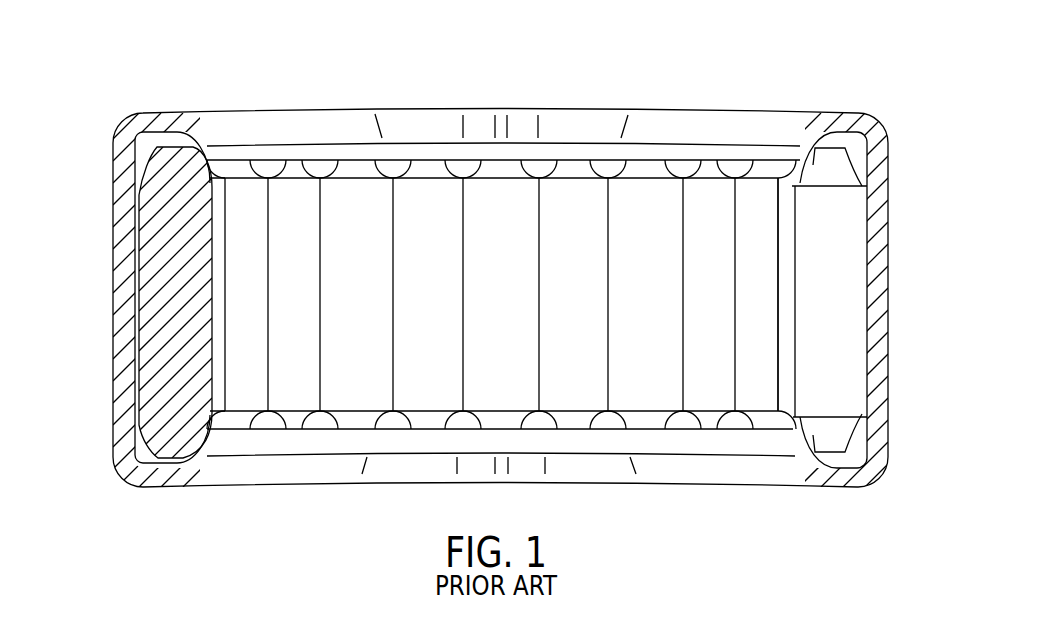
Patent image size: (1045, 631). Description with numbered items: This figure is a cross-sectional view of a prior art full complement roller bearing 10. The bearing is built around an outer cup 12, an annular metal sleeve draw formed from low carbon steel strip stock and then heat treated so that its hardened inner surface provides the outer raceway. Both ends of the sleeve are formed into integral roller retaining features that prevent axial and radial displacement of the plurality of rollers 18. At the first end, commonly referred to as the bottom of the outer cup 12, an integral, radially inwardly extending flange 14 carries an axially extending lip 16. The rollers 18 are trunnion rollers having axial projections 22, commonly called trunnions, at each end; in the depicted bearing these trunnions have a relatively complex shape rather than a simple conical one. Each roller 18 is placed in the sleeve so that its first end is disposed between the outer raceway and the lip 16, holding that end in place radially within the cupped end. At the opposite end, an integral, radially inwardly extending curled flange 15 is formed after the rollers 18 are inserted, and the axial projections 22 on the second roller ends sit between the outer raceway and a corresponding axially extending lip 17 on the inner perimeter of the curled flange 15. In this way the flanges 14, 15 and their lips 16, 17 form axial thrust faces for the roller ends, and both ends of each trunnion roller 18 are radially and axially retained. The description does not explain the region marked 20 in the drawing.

The full complement roller bearing 10 is at (174, 70).
The outer cup 12 is at (96, 300).
The radially inwardly extending flange 14 is at (168, 484).
The curled flange 15 is at (852, 118).
The axially extending lip 16 is at (320, 445).
The axially extending lip 17 is at (556, 149).
The rollers 18 is at (846, 268).
The cavity 20 is at (849, 323).
The axial projections 22 is at (857, 441).